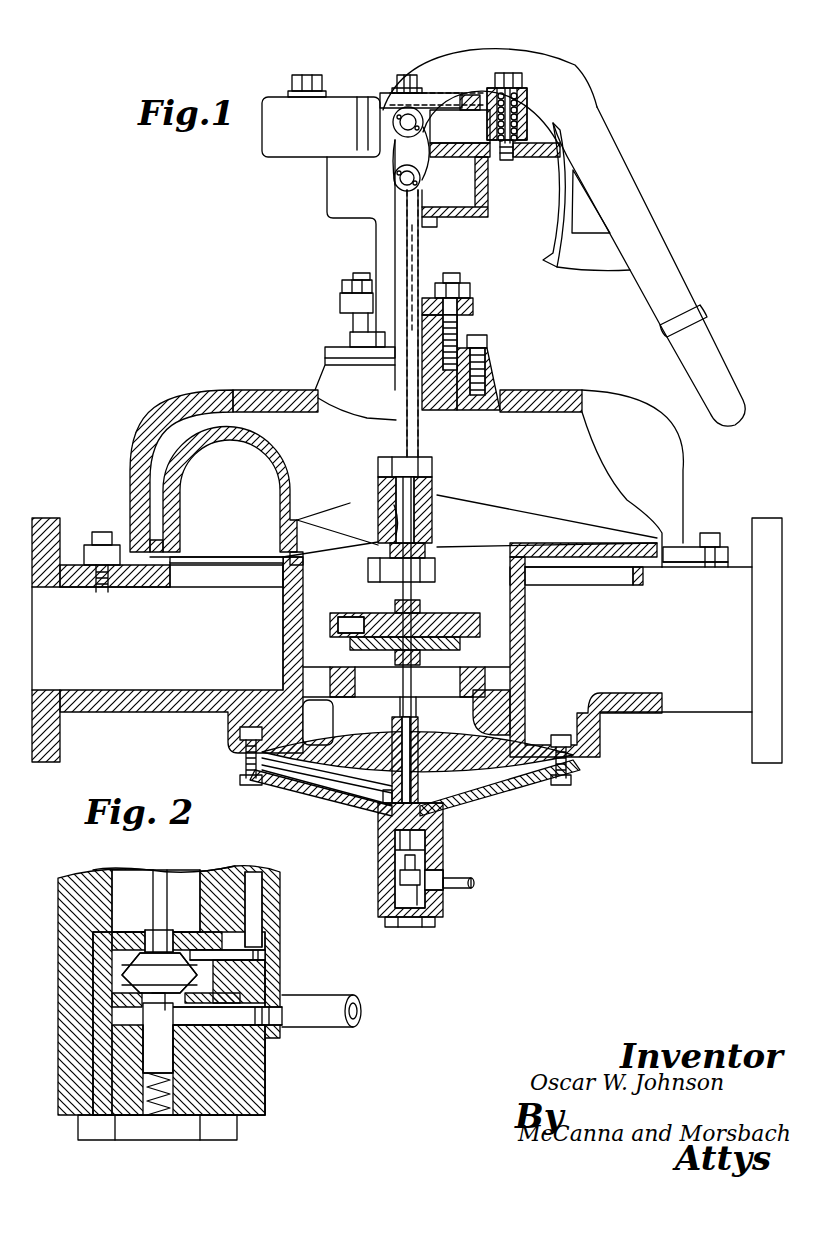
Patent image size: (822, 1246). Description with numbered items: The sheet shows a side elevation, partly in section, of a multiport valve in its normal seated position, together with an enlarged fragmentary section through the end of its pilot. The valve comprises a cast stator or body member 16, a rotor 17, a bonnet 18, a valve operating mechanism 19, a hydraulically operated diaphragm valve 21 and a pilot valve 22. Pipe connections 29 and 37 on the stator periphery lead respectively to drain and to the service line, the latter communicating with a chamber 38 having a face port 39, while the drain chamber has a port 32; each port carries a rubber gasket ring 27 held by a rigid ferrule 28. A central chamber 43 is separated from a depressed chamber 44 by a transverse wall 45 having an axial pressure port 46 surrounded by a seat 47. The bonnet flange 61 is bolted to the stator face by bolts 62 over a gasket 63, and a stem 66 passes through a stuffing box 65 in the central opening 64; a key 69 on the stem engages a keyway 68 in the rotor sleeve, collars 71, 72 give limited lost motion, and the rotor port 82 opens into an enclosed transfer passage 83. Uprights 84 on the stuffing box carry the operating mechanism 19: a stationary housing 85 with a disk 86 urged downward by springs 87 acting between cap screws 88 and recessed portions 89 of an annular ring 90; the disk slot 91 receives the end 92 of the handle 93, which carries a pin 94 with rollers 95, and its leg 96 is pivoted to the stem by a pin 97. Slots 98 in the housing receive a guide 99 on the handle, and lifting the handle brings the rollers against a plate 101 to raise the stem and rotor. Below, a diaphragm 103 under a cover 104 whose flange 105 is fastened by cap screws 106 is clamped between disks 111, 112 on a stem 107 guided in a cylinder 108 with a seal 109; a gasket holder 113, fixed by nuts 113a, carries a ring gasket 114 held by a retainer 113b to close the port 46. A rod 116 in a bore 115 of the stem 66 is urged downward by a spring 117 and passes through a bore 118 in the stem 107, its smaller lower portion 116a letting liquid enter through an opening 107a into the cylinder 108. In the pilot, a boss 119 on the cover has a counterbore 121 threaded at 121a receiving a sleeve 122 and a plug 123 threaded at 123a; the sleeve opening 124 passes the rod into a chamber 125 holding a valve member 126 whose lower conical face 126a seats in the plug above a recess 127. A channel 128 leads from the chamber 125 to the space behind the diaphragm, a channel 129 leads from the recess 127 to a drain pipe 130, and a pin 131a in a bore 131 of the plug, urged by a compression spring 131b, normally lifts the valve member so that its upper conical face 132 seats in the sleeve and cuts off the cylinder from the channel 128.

In FIG. 1, the stator 16 is at (613, 728).
In FIG. 1, the rotor 17 is at (528, 496).
In FIG. 1, the bonnet 18 is at (688, 467).
In FIG. 1, the valve operating mechanism 19 is at (608, 61).
In FIG. 1, the hydraulically operated valve 21 is at (478, 860).
In FIG. 1, the pilot valve 22 is at (446, 916).
In FIG. 1, the ring 27 is at (268, 580).
In FIG. 1, the ferrule 28 is at (185, 585).
In FIG. 1, the pipe connection 29 is at (767, 640).
In FIG. 1, the port 32 is at (593, 581).
In FIG. 1, the pipe connection 37 is at (62, 732).
In FIG. 1, the chamber 38 is at (283, 648).
In FIG. 1, the port 39 is at (235, 575).
In FIG. 1, the chamber 43 is at (308, 783).
In FIG. 1, the depressed chamber 44 is at (525, 625).
In FIG. 1, the transverse wall 45 is at (335, 695).
In FIG. 1, the pressure port 46 is at (452, 695).
In FIG. 1, the seat 47 is at (470, 695).
In FIG. 1, the annular flange 61 is at (688, 545).
In FIG. 1, the bolts 62 is at (104, 532).
In FIG. 1, the gasket 63 is at (716, 562).
In FIG. 1, the central opening 64 is at (490, 372).
In FIG. 1, the stuffing box 65 is at (498, 331).
In FIG. 1, the stem 66 is at (420, 262).
In FIG. 1, the keyway 68 is at (380, 485).
In FIG. 1, the key 69 is at (392, 520).
In FIG. 1, the collar 71 is at (375, 578).
In FIG. 1, the collar 72 is at (425, 470).
In FIG. 1, the port 82 is at (275, 552).
In FIG. 1, the transfer passage 83 is at (275, 455).
In FIG. 1, the uprights 84 is at (385, 233).
In FIG. 1, the cylindrical housing 85 is at (321, 127).
In FIG. 1, the disk 86 is at (460, 119).
In FIG. 1, the springs 87 is at (513, 160).
In FIG. 1, the cap screws 88 is at (310, 75).
In FIG. 1, the recessed portions 89 is at (530, 103).
In FIG. 1, the annular ring 90 is at (486, 85).
In FIG. 1, the slot 91 is at (390, 93).
In FIG. 1, the end of handle 92 is at (447, 62).
In FIG. 1, the handle 93 is at (618, 140).
In FIG. 1, the pin 94 is at (403, 123).
In FIG. 1, the rollers 95 is at (407, 145).
In FIG. 1, the leg 96 is at (421, 172).
In FIG. 1, the pin 97 is at (392, 188).
In FIG. 1, the slots 98 is at (545, 142).
In FIG. 1, the guide 99 is at (553, 205).
In FIG. 1, the plate 101 is at (458, 157).
In FIG. 1, the diaphragm 103 is at (498, 782).
In FIG. 1, the cover 104 is at (455, 806).
In FIG. 1, the peripheral flange 105 is at (571, 770).
In FIG. 1, the cap screws 106 is at (561, 785).
In FIG. 1, the stem 107 is at (403, 712).
In FIG. 1, the opening 107a is at (414, 715).
In FIG. 1, the cylinder 108 is at (385, 852).
In FIG. 2, the cylinder 108 is at (195, 872).
In FIG. 1, the seal 109 is at (372, 815).
In FIG. 1, the disk 111 is at (348, 758).
In FIG. 1, the disk 112 is at (470, 740).
In FIG. 1, the gasket holder 113 is at (480, 630).
In FIG. 1, the nuts 113a is at (430, 608).
In FIG. 1, the retainer 113b is at (350, 644).
In FIG. 1, the ring type gasket 114 is at (350, 622).
In FIG. 1, the bore 115 is at (430, 552).
In FIG. 1, the rod 116 is at (408, 605).
In FIG. 1, the lower portion of rod 116a is at (414, 785).
In FIG. 2, the lower portion of rod 116a is at (167, 892).
In FIG. 1, the spring 117 is at (440, 518).
In FIG. 1, the bore 118 is at (395, 785).
In FIG. 1, the boss 119 is at (382, 880).
In FIG. 2, the counterbore 121 is at (260, 980).
In FIG. 2, the threaded portion 121a is at (225, 1080).
In FIG. 2, the sleeve 122 is at (70, 958).
In FIG. 2, the plug 123 is at (105, 1070).
In FIG. 2, the threaded connection 123a is at (135, 1013).
In FIG. 2, the central opening 124 is at (173, 935).
In FIG. 2, the chamber 125 is at (100, 985).
In FIG. 2, the valve member 126 is at (159, 973).
In FIG. 2, the lower conical face 126a is at (250, 995).
In FIG. 2, the recess 127 is at (140, 1022).
In FIG. 2, the channel 128 is at (262, 925).
In FIG. 2, the channel 129 is at (265, 1040).
In FIG. 1, the pipe 130 is at (462, 888).
In FIG. 2, the pipe 130 is at (330, 1012).
In FIG. 2, the bore 131 is at (185, 1130).
In FIG. 2, the pin 131a is at (150, 1060).
In FIG. 2, the coiled compression spring 131b is at (158, 1118).
In FIG. 2, the upper conical face 132 is at (150, 955).